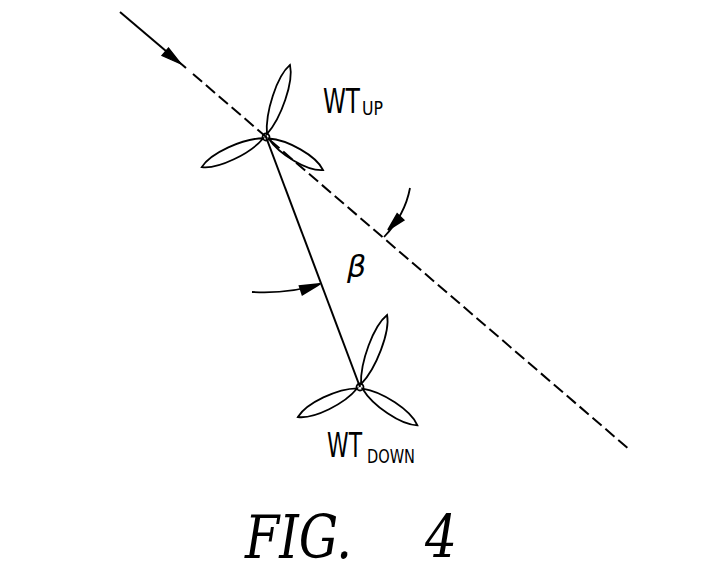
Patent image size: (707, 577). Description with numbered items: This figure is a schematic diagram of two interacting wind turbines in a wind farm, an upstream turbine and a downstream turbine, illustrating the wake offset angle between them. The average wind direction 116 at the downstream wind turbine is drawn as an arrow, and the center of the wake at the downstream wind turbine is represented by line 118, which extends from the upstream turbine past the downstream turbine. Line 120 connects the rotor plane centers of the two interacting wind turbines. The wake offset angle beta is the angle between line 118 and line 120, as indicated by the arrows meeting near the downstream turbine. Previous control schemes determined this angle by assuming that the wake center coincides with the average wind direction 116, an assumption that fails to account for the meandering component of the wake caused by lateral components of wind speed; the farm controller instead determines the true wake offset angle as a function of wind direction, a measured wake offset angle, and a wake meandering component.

The average wind direction 116 is at (134, 26).
The line 118 is at (478, 322).
The line 120 is at (332, 313).